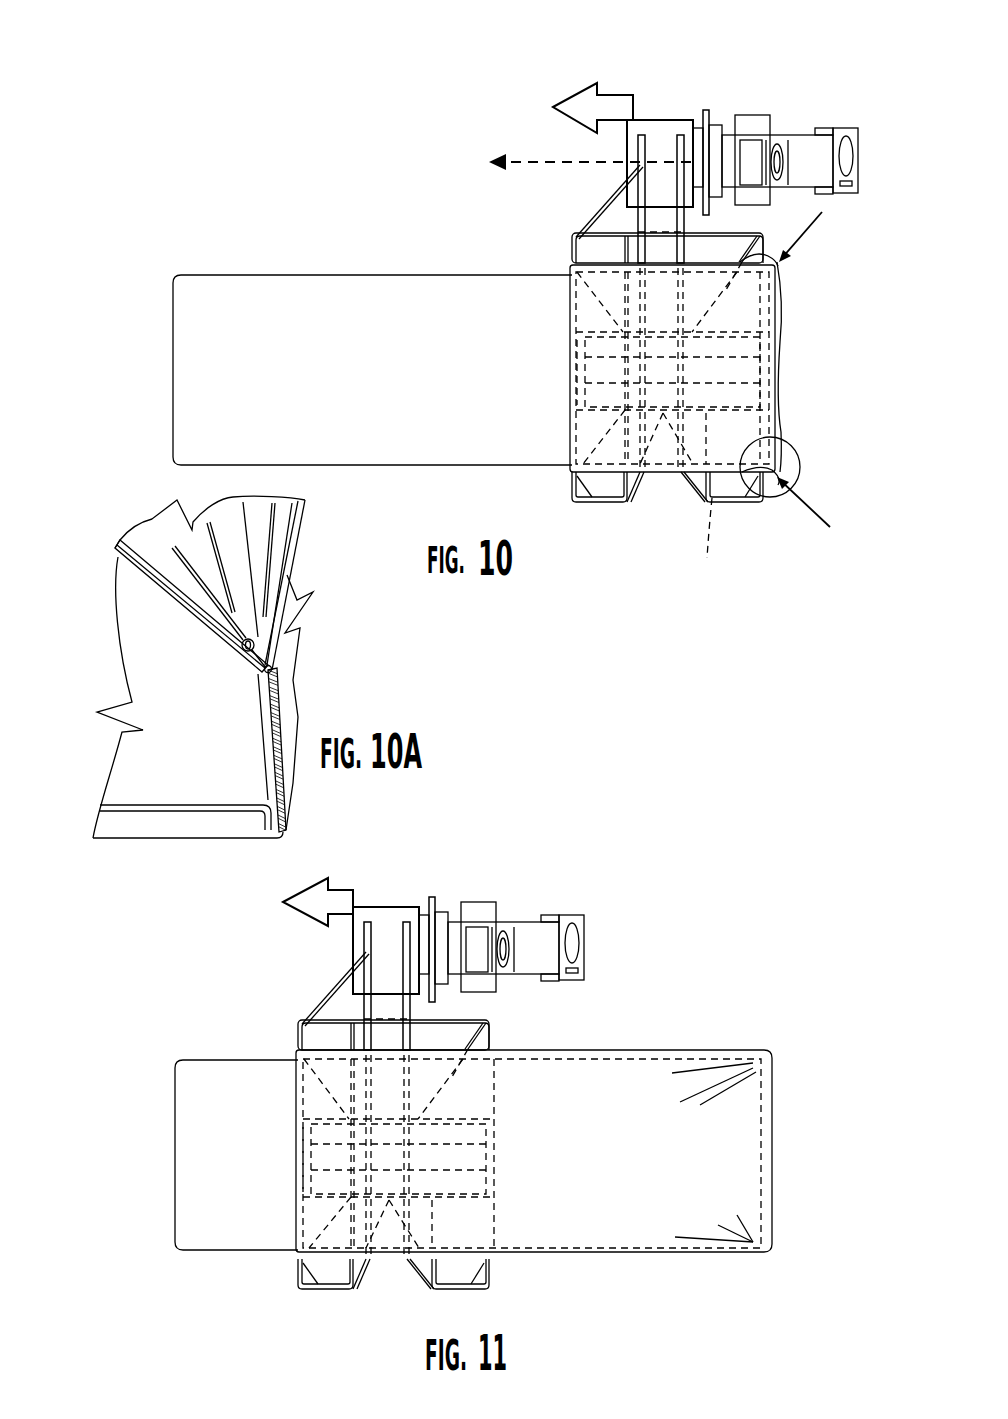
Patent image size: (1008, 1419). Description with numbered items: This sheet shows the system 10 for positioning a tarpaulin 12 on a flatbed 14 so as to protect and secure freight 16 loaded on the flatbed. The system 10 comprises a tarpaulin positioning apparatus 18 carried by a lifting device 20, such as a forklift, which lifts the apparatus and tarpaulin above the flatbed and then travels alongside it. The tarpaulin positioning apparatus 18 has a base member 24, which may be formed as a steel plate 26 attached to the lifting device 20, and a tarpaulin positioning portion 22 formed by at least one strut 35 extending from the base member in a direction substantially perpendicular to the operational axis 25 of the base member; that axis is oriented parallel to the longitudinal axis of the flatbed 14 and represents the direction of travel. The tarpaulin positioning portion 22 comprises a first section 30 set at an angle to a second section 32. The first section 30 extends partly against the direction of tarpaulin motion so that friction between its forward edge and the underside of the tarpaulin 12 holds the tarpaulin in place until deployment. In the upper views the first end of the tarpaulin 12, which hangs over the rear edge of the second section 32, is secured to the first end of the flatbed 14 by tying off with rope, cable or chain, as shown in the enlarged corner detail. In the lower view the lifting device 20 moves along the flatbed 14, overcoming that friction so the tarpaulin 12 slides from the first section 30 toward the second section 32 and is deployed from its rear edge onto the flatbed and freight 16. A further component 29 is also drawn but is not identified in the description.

In FIG. 10, the system 10 is at (583, 197).
In FIG. 11, the system 10 is at (528, 1012).
In FIG. 10, the tarpaulin 12 is at (777, 322).
In FIG. 10A, the tarpaulin 12 is at (273, 548).
In FIG. 11, the tarpaulin 12 is at (612, 1075).
In FIG. 10, the flatbed 14 is at (456, 453).
In FIG. 10A, the flatbed 14 is at (193, 828).
In FIG. 11, the flatbed 14 is at (212, 1256).
In FIG. 10A, the freight 16 is at (131, 770).
In FIG. 10, the tarpaulin positioning apparatus 18 is at (795, 362).
In FIG. 11, the tarpaulin positioning apparatus 18 is at (508, 1220).
In FIG. 10, the lifting device 20 is at (795, 131).
In FIG. 11, the lifting device 20 is at (527, 918).
In FIG. 10, the tarpaulin positioning portion 22 is at (598, 508).
In FIG. 11, the tarpaulin positioning portion 22 is at (326, 1296).
In FIG. 10, the base member 24 is at (662, 115).
In FIG. 11, the base member 24 is at (395, 897).
In FIG. 10, the operational axis 25 is at (598, 160).
In FIG. 11, the operational axis 25 is at (318, 902).
In FIG. 10, the plate 26 is at (681, 119).
In FIG. 11, the plate 26 is at (368, 905).
In FIG. 10, the plate 29 is at (716, 110).
In FIG. 11, the plate 29 is at (436, 895).
In FIG. 10, the first section 30 is at (556, 376).
In FIG. 11, the first section 30 is at (280, 1163).
In FIG. 10, the second section 32 is at (795, 385).
In FIG. 11, the second section 32 is at (502, 1157).
In FIG. 10, the strut 35 is at (638, 222).
In FIG. 11, the strut 35 is at (364, 1009).